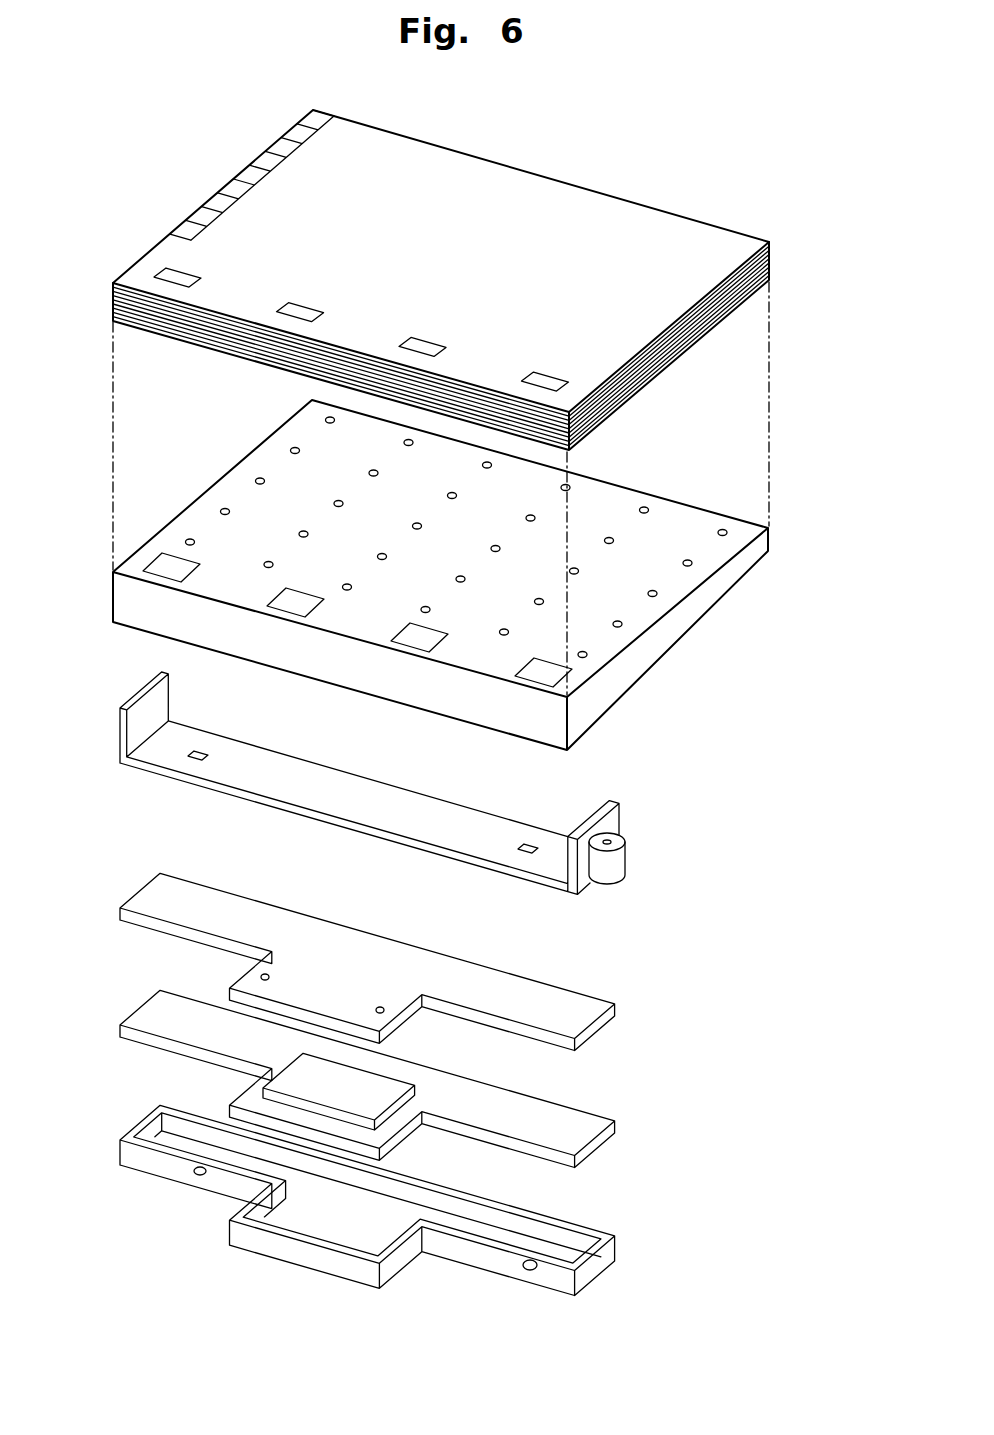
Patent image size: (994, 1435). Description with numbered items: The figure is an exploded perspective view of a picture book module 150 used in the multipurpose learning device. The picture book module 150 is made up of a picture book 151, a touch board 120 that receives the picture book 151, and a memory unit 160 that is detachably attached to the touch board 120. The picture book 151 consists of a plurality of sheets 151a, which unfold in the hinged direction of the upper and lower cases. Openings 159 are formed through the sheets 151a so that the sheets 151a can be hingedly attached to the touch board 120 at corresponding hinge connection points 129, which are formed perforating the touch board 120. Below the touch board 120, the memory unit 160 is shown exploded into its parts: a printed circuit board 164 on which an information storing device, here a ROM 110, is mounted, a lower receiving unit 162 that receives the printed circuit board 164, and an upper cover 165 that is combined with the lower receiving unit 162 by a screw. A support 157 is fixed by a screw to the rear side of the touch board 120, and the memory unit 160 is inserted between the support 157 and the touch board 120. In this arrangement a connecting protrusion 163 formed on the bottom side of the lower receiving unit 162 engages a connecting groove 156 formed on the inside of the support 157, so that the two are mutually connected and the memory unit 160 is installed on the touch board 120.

The picture book module 150 is at (781, 475).
The picture book 151 is at (595, 205).
The sheets 151a is at (800, 253).
The openings 159 is at (177, 275).
The touch board 120 is at (640, 660).
The hinge connection points 129 is at (165, 567).
The connecting groove 156 is at (532, 846).
The support 157 is at (626, 856).
The memory unit 160 is at (693, 1037).
The upper cover 165 is at (577, 1020).
The printed circuit board 164 is at (577, 1137).
The ROM 110 is at (303, 1080).
The lower receiving unit 162 is at (585, 1270).
The connecting protrusion 163 is at (198, 1174).